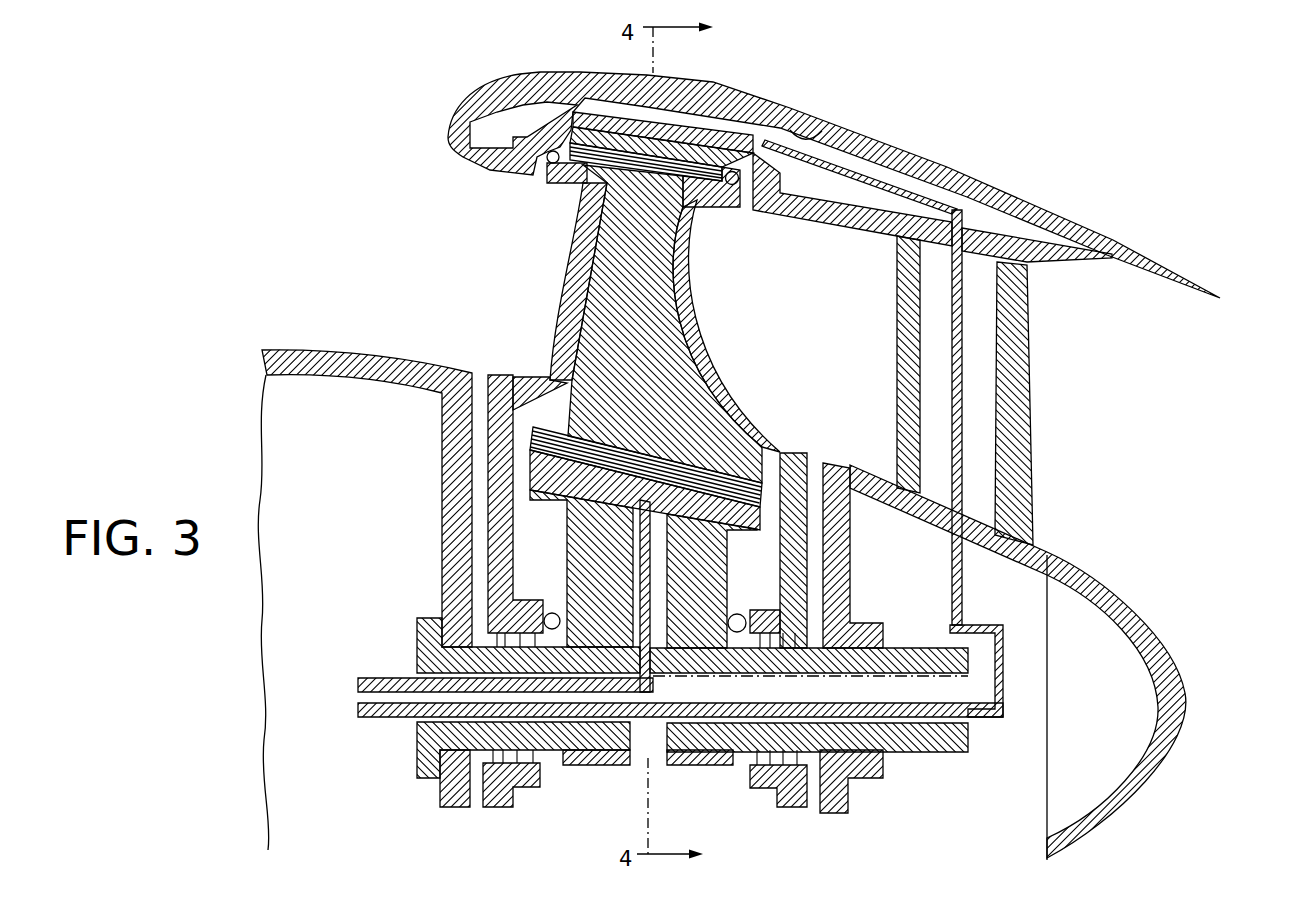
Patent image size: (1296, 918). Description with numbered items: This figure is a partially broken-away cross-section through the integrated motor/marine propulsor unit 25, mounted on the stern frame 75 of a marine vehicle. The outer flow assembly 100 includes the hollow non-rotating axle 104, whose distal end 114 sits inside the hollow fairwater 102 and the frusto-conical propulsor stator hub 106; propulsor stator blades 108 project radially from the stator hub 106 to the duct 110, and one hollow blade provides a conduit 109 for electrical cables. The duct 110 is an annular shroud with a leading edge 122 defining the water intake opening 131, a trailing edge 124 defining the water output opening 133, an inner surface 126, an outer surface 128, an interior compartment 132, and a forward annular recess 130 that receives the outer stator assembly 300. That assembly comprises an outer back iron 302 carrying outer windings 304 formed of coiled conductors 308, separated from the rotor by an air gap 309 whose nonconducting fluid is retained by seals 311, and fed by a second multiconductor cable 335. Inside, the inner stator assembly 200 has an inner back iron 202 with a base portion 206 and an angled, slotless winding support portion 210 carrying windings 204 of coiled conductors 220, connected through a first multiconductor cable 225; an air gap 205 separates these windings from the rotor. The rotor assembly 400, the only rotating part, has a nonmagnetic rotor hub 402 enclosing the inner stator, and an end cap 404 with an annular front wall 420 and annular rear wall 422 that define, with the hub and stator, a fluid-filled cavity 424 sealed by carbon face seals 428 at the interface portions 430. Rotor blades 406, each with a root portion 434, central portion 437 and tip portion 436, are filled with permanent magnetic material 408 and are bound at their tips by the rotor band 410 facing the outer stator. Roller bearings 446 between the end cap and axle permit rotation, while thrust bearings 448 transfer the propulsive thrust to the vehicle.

The integrated motor/marine propulsor unit 25 is at (370, 110).
The stern frame 75 is at (357, 355).
The outer flow assembly 100 is at (1140, 210).
The fairwater 102 is at (1157, 630).
The axle 104 is at (400, 785).
The propulsor stator hub 106 is at (1043, 547).
The propulsor stator blades 108 is at (1020, 333).
The conduit 109 is at (993, 440).
The duct 110 is at (1047, 210).
The distal end 114 is at (960, 752).
The leading edge 122 is at (447, 122).
The trailing edge 124 is at (1223, 297).
The inner surface 126 is at (487, 170).
The outer surface 128 is at (657, 80).
The forward annular recess 130 is at (545, 182).
The water intake opening 131 is at (333, 213).
The interior compartment 132 is at (852, 122).
The water output opening 133 is at (1178, 433).
The inner stator assembly 200 is at (497, 600).
The inner back iron 202 is at (530, 556).
The windings 204 is at (765, 485).
The air gap 205 is at (470, 367).
The base portion 206 is at (600, 650).
The winding support portion 210 is at (530, 497).
The coiled conductors 220 is at (800, 457).
The first multiconductor cable 225 is at (360, 681).
The outer stator assembly 300 is at (684, 132).
The outer back iron 302 is at (630, 168).
The outer windings 304 is at (716, 150).
The coiled conductors 308 is at (553, 113).
The air gap 309 is at (580, 152).
The seals 311 is at (560, 97).
The second multiconductor cable 335 is at (377, 714).
The rotor assembly 400 is at (485, 330).
The rotor hub 402 is at (533, 377).
The end cap 404 is at (470, 415).
The rotor blades 406 is at (700, 318).
The permanent magnetic material 408 is at (670, 398).
The rotor band 410 is at (557, 200).
The annular front wall 420 is at (450, 473).
The annular rear wall 422 is at (807, 483).
The cavity 424 is at (560, 528).
The carbon face seals 428 is at (573, 758).
The interface portions 430 is at (746, 595).
The root portion 434 is at (713, 403).
The tip portion 436 is at (695, 210).
The central portion 437 is at (672, 333).
The roller bearings 446 is at (450, 670).
The thrust bearings 448 is at (545, 616).